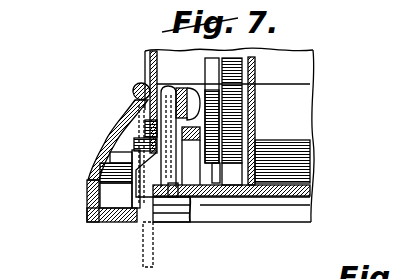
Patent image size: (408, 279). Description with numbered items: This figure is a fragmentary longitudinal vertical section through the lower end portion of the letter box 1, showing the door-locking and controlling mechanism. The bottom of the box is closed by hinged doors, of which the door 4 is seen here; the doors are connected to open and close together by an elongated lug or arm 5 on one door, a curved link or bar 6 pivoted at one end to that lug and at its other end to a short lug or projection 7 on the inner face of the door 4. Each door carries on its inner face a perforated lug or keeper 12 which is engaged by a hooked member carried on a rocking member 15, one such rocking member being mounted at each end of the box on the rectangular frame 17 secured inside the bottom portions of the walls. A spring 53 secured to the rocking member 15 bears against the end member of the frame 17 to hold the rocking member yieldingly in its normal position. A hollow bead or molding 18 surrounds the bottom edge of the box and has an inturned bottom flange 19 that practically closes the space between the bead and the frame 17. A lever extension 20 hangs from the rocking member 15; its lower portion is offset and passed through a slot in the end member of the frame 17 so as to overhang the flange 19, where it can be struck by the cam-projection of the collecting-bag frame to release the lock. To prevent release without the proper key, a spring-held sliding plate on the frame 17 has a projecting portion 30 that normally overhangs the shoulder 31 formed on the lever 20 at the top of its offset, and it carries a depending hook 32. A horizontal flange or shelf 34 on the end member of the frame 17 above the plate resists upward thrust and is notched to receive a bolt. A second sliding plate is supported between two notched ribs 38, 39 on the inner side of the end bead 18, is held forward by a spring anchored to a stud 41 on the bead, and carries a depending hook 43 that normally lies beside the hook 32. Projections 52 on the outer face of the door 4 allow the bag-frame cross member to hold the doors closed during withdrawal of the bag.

The letter box 1 is at (292, 62).
The door 4 is at (293, 191).
The lug or arm 5 is at (236, 117).
The link or bar 6 is at (214, 85).
The lug or projection 7 is at (233, 165).
The lug or keeper 12 is at (192, 198).
The rocking member 15 is at (185, 101).
The rectangular frame 17 is at (170, 92).
The bead or molding 18 is at (97, 203).
The bottom flange 19 is at (107, 217).
The lever extension 20 is at (140, 106).
The projecting portion 30 is at (133, 135).
The shoulder 31 is at (137, 145).
The depending hook 32 is at (143, 215).
The flange or shelf 34 is at (145, 123).
The notched rib 38 is at (110, 187).
The notched rib 39 is at (100, 157).
The stud 41 is at (103, 172).
The depending hook 43 is at (133, 212).
The projection 52 is at (167, 222).
The spring 53 is at (175, 192).